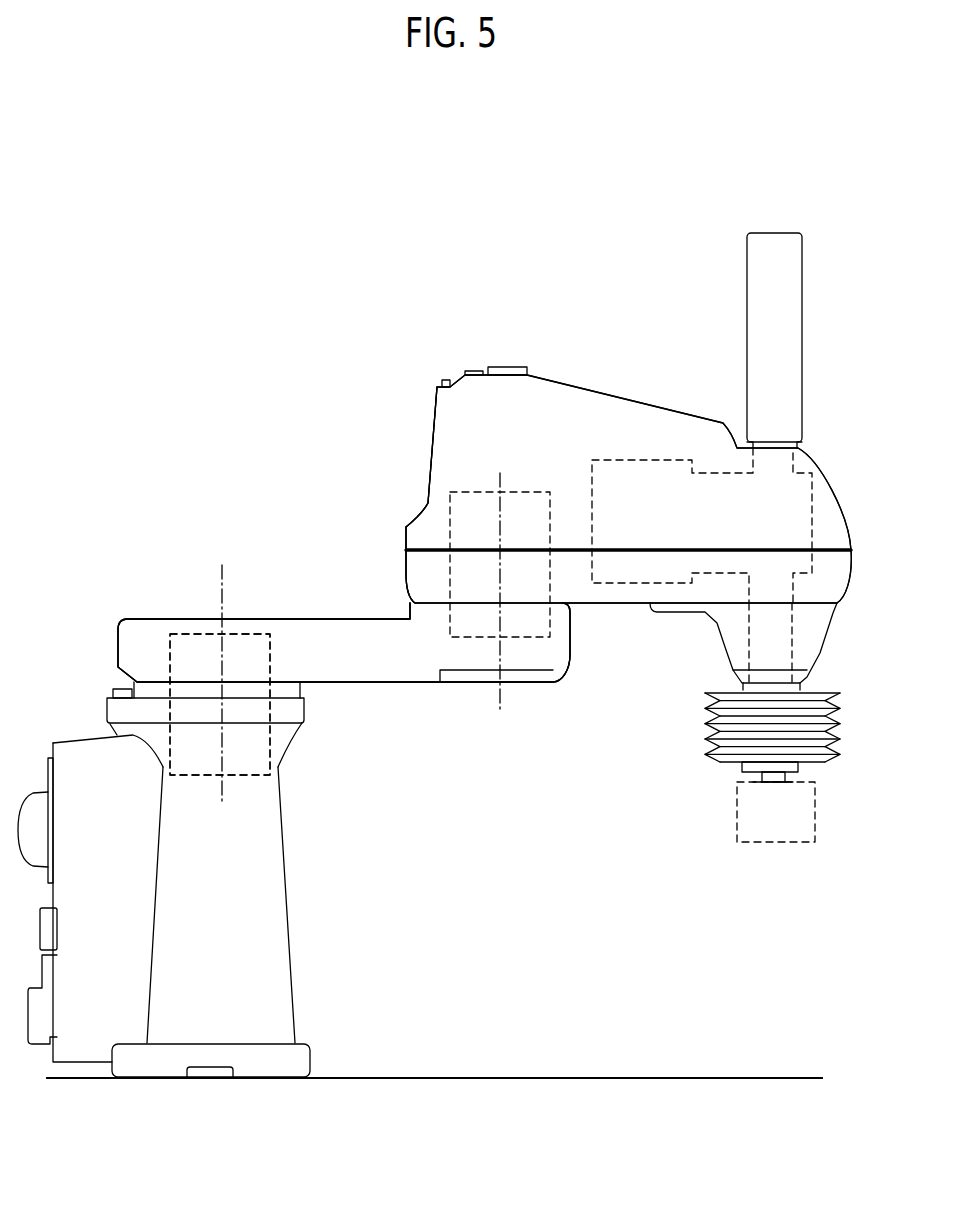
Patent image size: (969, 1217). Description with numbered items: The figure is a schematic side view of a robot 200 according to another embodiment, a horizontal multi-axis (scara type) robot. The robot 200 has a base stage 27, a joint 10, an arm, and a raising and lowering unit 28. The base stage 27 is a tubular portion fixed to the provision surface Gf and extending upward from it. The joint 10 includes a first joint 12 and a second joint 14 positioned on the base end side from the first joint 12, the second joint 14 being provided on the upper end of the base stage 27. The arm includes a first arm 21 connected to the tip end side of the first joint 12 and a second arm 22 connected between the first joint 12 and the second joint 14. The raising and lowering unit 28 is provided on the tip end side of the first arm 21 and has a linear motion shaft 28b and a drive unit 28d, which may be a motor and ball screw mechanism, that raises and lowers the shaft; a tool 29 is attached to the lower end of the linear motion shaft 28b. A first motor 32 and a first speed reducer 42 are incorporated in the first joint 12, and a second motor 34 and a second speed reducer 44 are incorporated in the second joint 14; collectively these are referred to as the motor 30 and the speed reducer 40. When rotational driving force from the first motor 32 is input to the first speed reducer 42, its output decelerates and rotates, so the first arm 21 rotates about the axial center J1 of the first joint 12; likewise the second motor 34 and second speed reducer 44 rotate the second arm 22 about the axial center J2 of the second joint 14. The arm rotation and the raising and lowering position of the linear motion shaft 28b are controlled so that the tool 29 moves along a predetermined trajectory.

The robot 200 is at (250, 402).
The joint 10 is at (468, 706).
The first joint 12 is at (394, 598).
The second joint 14 is at (113, 679).
The first arm 21 is at (585, 597).
The second arm 22 is at (385, 668).
The base stage 27 is at (273, 945).
The raising and lowering unit 28 is at (816, 420).
The linear motion shaft 28b is at (792, 620).
The drive unit 28d is at (652, 460).
The tool 29 is at (735, 807).
The motor 30 is at (413, 498).
The first motor 32 is at (447, 548).
The first speed reducer 42 is at (447, 548).
The second motor 34 is at (280, 753).
The second speed reducer 44 is at (280, 753).
The speed reducer 40 is at (417, 461).
The axial center of the first joint J1 is at (503, 702).
The axial center of the second joint J2 is at (222, 582).
The provision surface Gf is at (565, 1077).